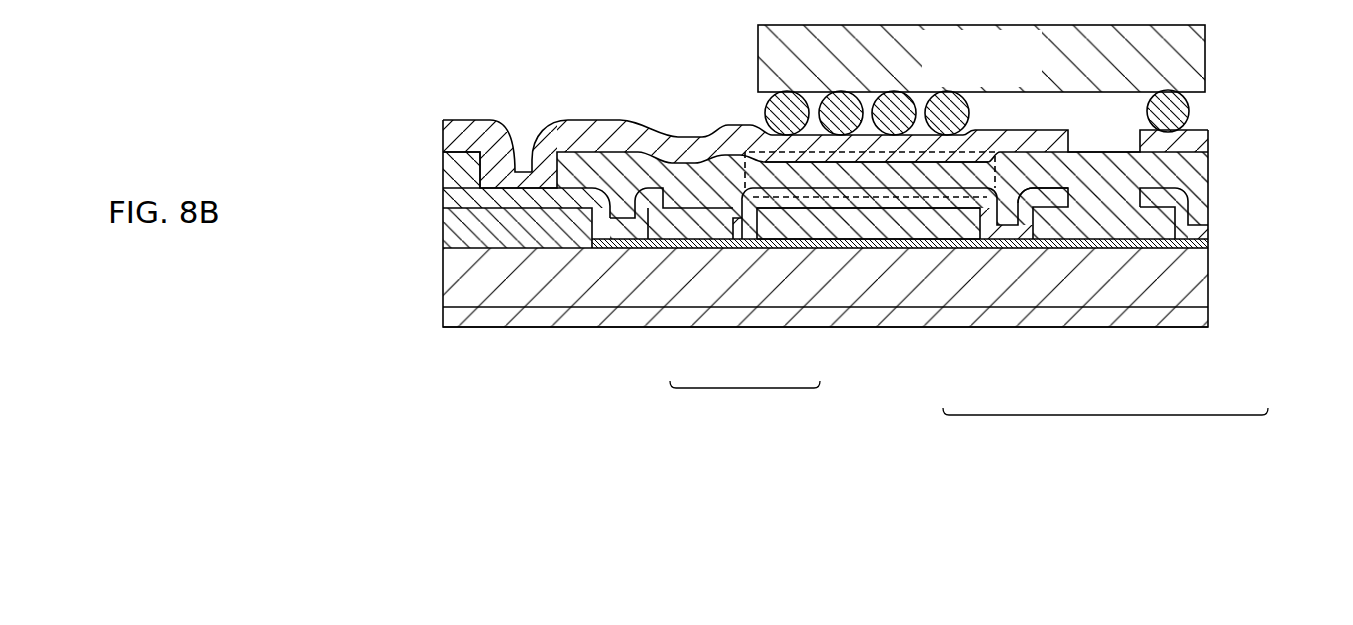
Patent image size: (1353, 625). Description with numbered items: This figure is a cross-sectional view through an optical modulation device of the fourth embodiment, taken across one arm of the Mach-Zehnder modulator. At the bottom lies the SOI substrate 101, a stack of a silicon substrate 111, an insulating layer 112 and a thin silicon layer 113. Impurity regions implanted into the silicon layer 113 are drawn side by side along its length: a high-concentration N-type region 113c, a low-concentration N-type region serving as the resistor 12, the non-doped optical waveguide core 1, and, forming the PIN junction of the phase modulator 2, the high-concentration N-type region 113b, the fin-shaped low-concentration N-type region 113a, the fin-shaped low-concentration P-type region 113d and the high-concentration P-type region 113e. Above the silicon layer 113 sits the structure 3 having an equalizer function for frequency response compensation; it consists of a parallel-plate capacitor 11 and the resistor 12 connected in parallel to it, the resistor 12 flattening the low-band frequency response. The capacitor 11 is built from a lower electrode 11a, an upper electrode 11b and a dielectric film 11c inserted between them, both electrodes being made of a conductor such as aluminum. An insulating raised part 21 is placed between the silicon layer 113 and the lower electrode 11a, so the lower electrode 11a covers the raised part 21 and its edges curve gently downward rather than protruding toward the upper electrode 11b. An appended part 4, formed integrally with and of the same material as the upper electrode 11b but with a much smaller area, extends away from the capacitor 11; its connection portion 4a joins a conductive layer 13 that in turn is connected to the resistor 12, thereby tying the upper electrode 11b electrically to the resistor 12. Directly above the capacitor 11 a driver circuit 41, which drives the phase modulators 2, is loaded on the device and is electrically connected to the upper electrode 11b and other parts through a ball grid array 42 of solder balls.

The optical waveguide core 1 is at (1105, 243).
The phase modulator 2 is at (1105, 433).
The structure 3 is at (745, 402).
The appended part 4 is at (590, 133).
The connection portion 4a is at (493, 168).
The capacitor 11 is at (802, 198).
The lower electrode 11a is at (913, 209).
The upper electrode 11b is at (968, 143).
The dielectric film 11c is at (885, 181).
The resistor 12 is at (680, 253).
The conductive layer 13 is at (457, 197).
The raised part 21 is at (843, 221).
The driver circuit 41 is at (1185, 61).
The ball grid array 42 is at (1182, 101).
The SOI substrate 101 is at (367, 250).
The silicon substrate 111 is at (455, 318).
The insulating layer 112 is at (455, 284).
The silicon layer 113 is at (593, 243).
The low-concentration N-type region 113a is at (1070, 253).
The high-concentration N-type region 113b is at (975, 253).
The high-concentration N-type region 113c is at (623, 252).
The low-concentration P-type region 113d is at (1133, 253).
The high-concentration P-type region 113e is at (1185, 253).